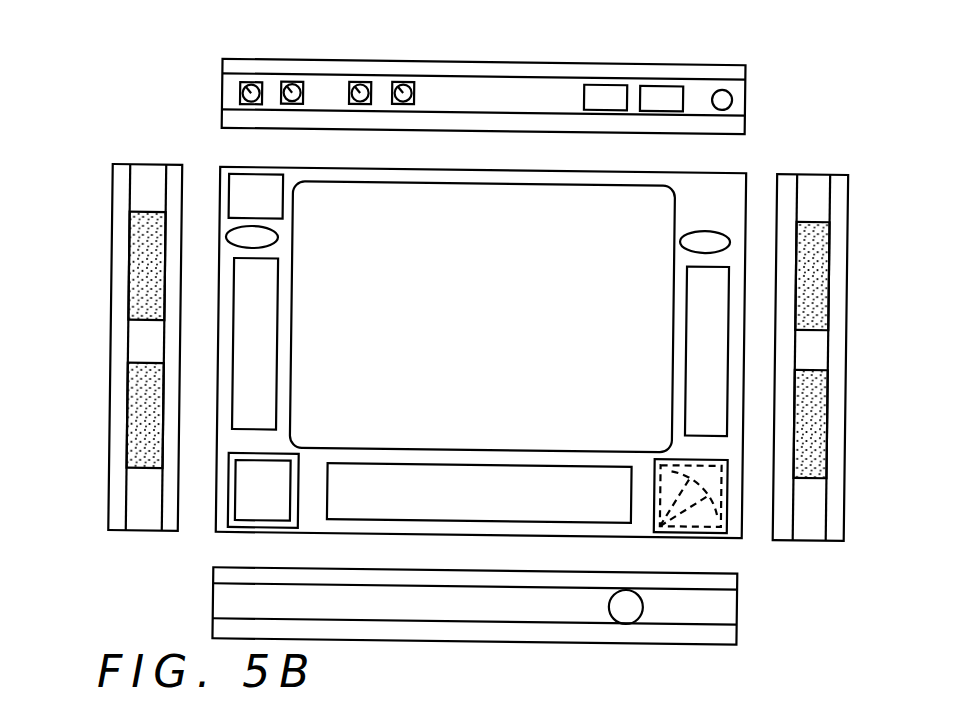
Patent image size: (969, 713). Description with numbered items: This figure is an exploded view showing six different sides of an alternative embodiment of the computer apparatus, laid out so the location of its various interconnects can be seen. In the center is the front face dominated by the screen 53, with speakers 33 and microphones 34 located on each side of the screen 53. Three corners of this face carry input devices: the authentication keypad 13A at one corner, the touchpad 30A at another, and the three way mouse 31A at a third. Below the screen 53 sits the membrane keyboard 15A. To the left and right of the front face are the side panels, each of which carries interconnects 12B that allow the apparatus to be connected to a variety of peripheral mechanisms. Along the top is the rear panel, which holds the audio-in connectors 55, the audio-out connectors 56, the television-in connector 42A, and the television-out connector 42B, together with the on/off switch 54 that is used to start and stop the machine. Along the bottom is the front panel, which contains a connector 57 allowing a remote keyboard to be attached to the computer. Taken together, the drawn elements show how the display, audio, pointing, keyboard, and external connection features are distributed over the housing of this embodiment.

The audio-in connectors 55 is at (287, 94).
The audio-out connectors 56 is at (397, 93).
The television-in connector 42A is at (609, 95).
The television-out connector 42B is at (654, 95).
The on/off switch 54 is at (721, 95).
The authentication keypad 13A is at (251, 200).
The microphones 34 is at (254, 243).
The screen 53 is at (482, 316).
The speakers 33 is at (251, 401).
The touchpad 30A is at (267, 499).
The membrane keyboard 15A is at (479, 493).
The three way mouse 31A is at (694, 502).
The interconnects 12B is at (147, 262).
The connector 57 is at (629, 605).